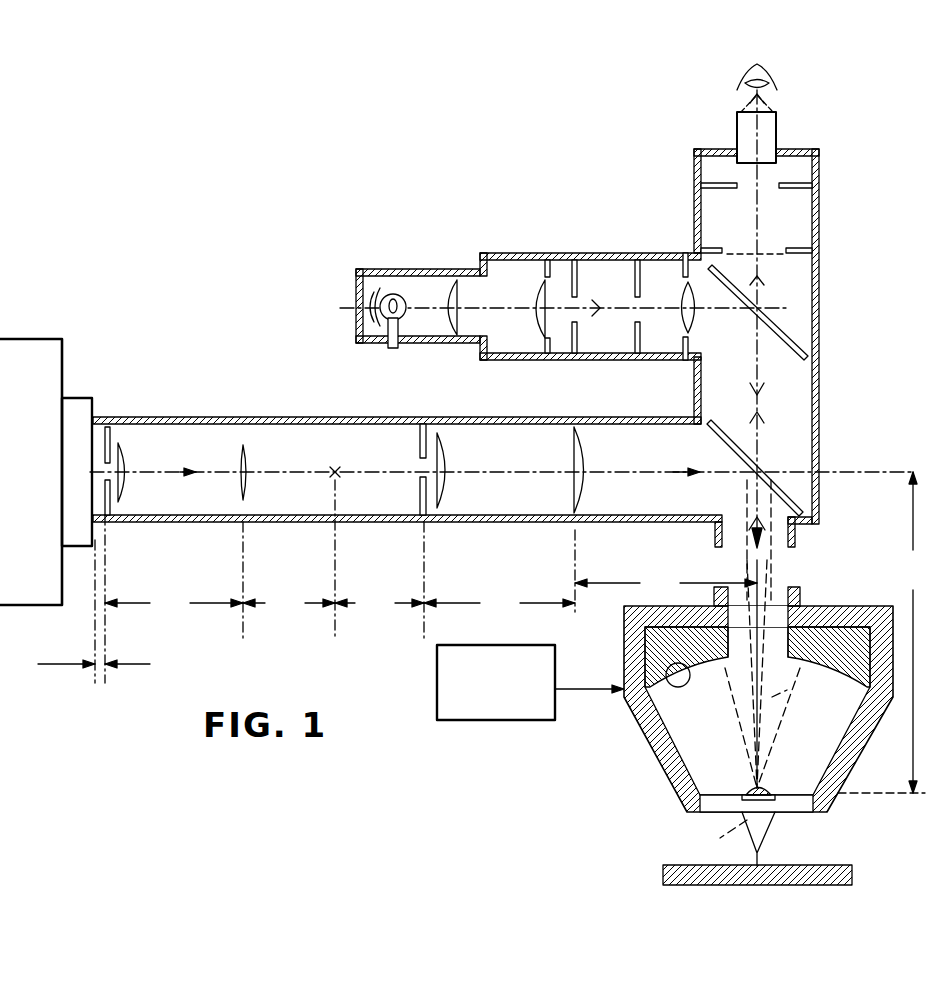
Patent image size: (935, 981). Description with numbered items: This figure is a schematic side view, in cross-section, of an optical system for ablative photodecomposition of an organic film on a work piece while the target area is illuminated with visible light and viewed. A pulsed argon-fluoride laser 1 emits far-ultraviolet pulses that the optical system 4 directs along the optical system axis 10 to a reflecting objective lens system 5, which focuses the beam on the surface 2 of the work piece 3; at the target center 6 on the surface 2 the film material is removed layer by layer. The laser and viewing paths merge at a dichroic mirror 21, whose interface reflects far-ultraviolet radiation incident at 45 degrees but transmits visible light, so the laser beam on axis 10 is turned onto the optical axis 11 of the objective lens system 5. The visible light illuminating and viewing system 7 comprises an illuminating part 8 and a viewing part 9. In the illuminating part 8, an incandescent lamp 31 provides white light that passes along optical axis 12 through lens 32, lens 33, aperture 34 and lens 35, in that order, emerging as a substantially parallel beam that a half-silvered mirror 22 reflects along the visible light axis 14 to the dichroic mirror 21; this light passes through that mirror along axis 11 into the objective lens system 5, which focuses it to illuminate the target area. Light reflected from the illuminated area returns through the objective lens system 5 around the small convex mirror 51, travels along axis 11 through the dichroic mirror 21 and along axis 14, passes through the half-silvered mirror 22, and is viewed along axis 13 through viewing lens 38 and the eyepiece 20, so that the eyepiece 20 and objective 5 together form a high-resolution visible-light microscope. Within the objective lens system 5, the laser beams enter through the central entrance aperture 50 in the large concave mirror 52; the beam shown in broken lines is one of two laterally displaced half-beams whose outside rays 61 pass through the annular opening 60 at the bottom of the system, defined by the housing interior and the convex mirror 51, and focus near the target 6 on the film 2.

The laser 1 is at (52, 339).
The surface of work piece 2 is at (815, 862).
The work piece 3 is at (666, 886).
The optical system 4 is at (246, 404).
The reflecting objective lens system 5 is at (746, 703).
The target center 6 is at (750, 864).
The visible light optical illumination and viewing system 7 is at (565, 254).
The illuminating part 8 is at (540, 250).
The viewing part 9 is at (822, 184).
The optical system axis 10 is at (157, 472).
The optical axis of reflecting objective lens system 11 is at (758, 566).
The optical axis of illuminating part 12 is at (478, 300).
The optical axis 13 is at (758, 232).
The axis of system 7 14 is at (757, 365).
The eyepiece 20 is at (778, 140).
The dichroic mirror 21 is at (757, 455).
The half-silvered mirror 22 is at (789, 310).
The incandescent lamp 31 is at (400, 292).
The lens 32 is at (460, 318).
The lens 33 is at (548, 313).
The aperture 34 is at (598, 280).
The lens 35 is at (693, 318).
The viewing lens 38 is at (722, 170).
The incidence angle 45 is at (748, 475).
The central entrance aperture 50 is at (775, 594).
The small convex mirror 51 is at (748, 780).
The large concave mirror 52 is at (680, 663).
The annular opening 60 is at (790, 822).
The beam rays 61 is at (757, 703).